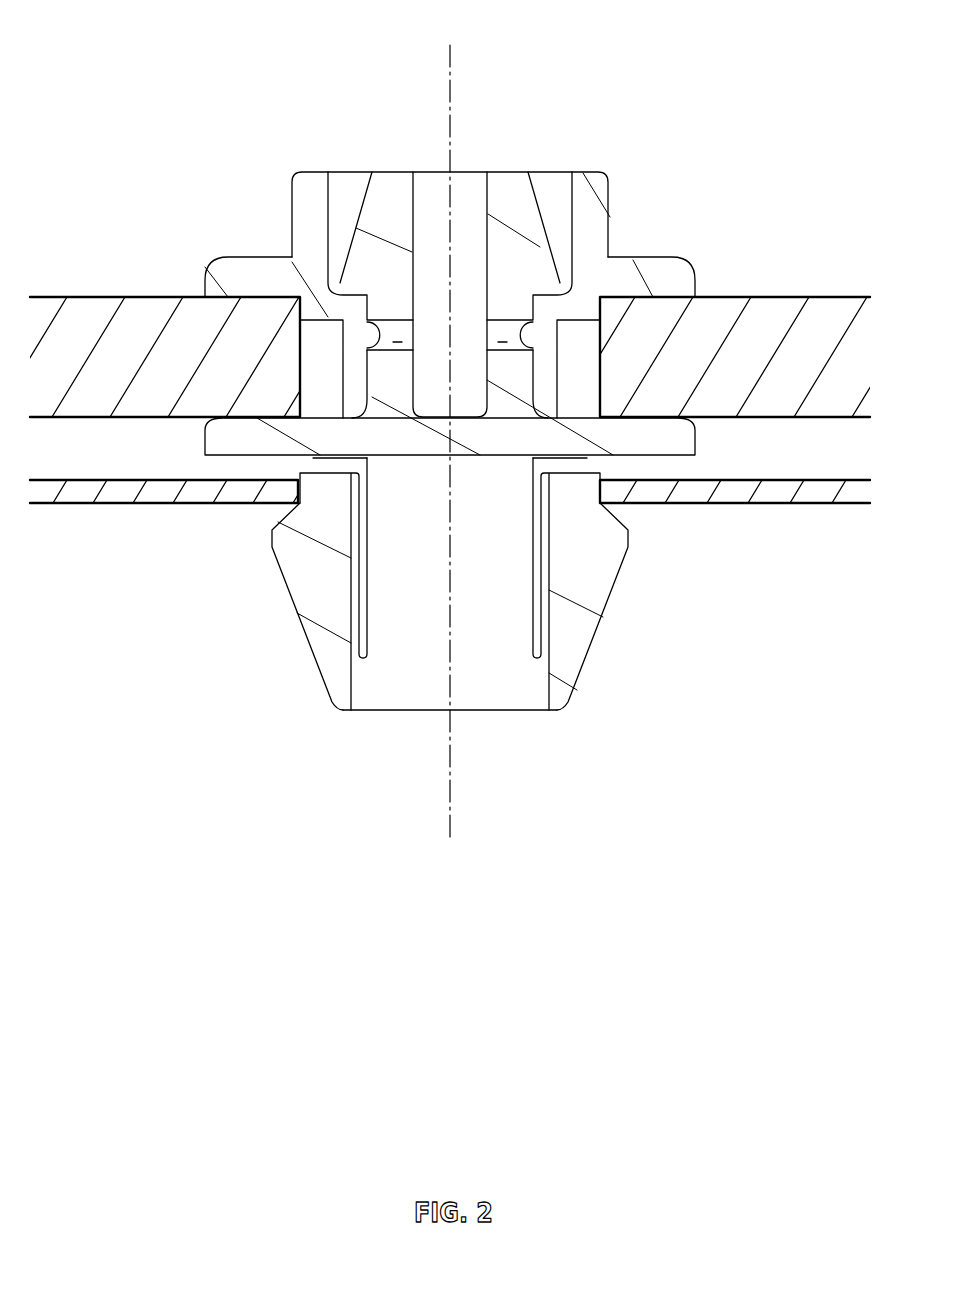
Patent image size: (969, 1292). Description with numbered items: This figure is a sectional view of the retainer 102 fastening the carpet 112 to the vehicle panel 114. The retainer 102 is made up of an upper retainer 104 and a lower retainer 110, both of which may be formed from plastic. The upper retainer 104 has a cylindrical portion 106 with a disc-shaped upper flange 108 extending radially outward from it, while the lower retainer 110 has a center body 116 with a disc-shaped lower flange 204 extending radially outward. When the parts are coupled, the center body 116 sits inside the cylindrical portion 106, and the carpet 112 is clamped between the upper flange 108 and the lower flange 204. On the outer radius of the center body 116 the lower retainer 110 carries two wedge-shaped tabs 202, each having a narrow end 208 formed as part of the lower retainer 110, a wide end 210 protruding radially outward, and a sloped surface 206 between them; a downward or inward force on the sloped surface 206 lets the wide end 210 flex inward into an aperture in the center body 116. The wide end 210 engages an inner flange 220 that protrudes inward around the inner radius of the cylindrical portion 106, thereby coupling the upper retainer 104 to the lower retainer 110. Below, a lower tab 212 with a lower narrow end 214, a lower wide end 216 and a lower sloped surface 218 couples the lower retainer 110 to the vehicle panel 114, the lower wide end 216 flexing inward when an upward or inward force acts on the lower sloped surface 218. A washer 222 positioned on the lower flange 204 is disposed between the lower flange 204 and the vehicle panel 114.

The retainer 102 is at (592, 102).
The upper retainer 104 is at (310, 258).
The cylindrical portion 106 is at (313, 235).
The upper flange 108 is at (653, 270).
The lower retainer 110 is at (373, 440).
The carpet 112 is at (170, 358).
The vehicle panel 114 is at (120, 495).
The center body 116 is at (397, 197).
The tab 202 is at (513, 247).
The lower flange 204 is at (247, 442).
The sloped surface 206 is at (348, 249).
The narrow end 208 is at (520, 195).
The wide end 210 is at (547, 277).
The lower tab 212 is at (313, 577).
The lower narrow end 214 is at (562, 693).
The lower wide end 216 is at (608, 547).
The lower sloped surface 218 is at (614, 637).
The inner flange 220 is at (543, 300).
The washer 222 is at (630, 472).